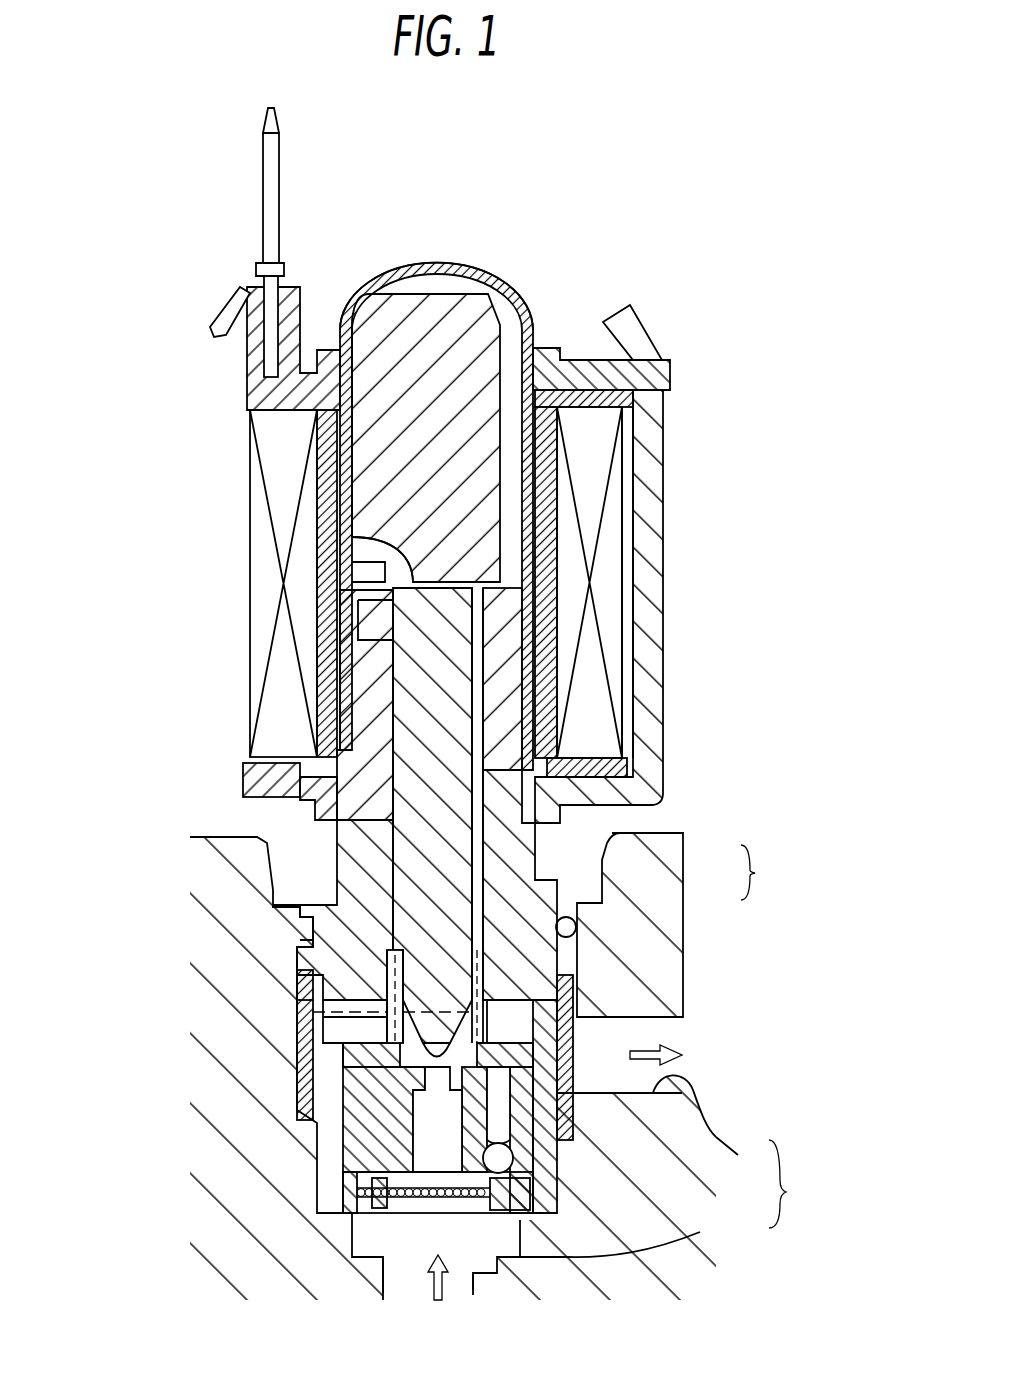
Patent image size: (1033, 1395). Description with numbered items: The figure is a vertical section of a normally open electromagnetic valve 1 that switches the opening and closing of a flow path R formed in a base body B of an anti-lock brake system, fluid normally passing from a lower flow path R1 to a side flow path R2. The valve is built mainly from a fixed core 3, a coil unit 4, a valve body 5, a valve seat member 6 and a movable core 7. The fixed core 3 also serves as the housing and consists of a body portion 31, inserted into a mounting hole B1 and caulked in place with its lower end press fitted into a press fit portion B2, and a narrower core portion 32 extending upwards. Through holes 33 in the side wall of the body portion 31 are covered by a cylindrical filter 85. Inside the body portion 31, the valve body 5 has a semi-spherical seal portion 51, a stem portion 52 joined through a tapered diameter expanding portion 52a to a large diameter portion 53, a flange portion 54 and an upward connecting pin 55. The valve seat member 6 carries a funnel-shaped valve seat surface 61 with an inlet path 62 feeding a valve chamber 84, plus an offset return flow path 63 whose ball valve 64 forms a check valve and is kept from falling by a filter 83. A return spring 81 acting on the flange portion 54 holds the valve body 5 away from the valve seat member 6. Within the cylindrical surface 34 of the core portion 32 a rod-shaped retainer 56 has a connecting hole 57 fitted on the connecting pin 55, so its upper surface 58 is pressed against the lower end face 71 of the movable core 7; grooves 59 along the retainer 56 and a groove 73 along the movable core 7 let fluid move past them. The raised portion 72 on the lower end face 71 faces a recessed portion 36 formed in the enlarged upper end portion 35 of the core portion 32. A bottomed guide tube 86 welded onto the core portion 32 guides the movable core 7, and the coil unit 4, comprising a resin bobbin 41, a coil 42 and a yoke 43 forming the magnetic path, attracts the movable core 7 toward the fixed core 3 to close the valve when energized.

The normally open electromagnetic valve 1 is at (454, 704).
The fixed core 3 is at (757, 872).
The coil unit 4 is at (678, 375).
The valve body 5 is at (578, 1002).
The valve seat member 6 is at (316, 1135).
The movable core 7 is at (492, 307).
The body portion 31 is at (548, 885).
The core portion 32 is at (638, 843).
The through holes 33 is at (573, 1023).
The cylindrical surface 34 is at (385, 748).
The upper end portion 35 is at (368, 603).
The recessed portion 36 is at (388, 573).
The bobbin 41 is at (603, 412).
The coil 42 is at (600, 445).
The yoke 43 is at (650, 405).
The seal portion 51 is at (345, 1072).
The stem portion 52 is at (297, 1047).
The diameter expanding portion 52a is at (297, 1000).
The large diameter portion 53 is at (297, 987).
The flange portion 54 is at (300, 948).
The connecting pin 55 is at (322, 922).
The retainer 56 is at (415, 827).
The connecting hole 57 is at (400, 890).
The upper surface 58 is at (410, 560).
The grooves 59 is at (548, 625).
The valve seat surface 61 is at (466, 1052).
The inlet path 62 is at (437, 1157).
The return flow path 63 is at (502, 1122).
The ball valve 64 is at (507, 1158).
The lower end face 71 is at (502, 590).
The raised portion 72 is at (546, 560).
The groove 73 is at (512, 472).
The return spring 81 is at (297, 1008).
The filter 83 is at (497, 1207).
The valve chamber 84 is at (480, 1010).
The cylindrical filter 85 is at (577, 1050).
The guide tube 86 is at (452, 262).
The base body B is at (655, 833).
The mounting hole B1 is at (577, 930).
The press fit portion B2 is at (317, 1215).
The flow path R is at (787, 1184).
The flow path R1 is at (700, 1232).
The flow path R2 is at (744, 1155).